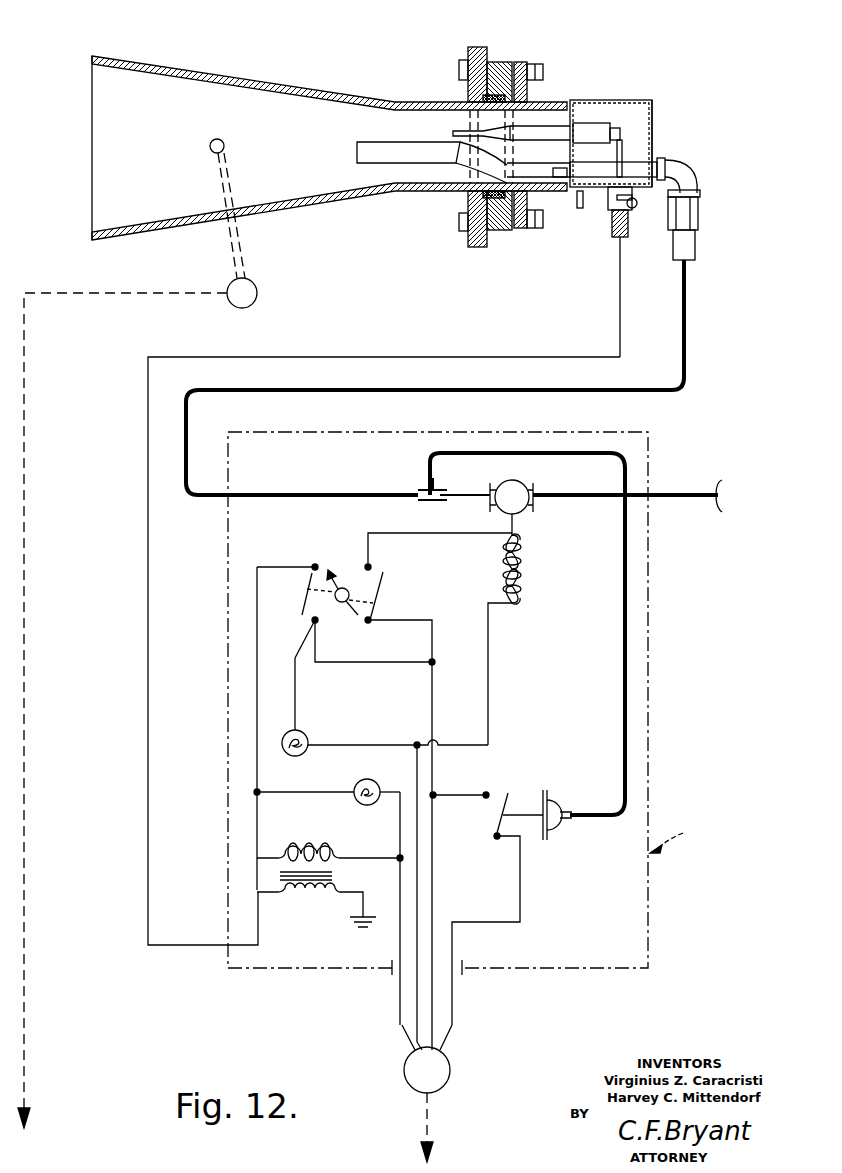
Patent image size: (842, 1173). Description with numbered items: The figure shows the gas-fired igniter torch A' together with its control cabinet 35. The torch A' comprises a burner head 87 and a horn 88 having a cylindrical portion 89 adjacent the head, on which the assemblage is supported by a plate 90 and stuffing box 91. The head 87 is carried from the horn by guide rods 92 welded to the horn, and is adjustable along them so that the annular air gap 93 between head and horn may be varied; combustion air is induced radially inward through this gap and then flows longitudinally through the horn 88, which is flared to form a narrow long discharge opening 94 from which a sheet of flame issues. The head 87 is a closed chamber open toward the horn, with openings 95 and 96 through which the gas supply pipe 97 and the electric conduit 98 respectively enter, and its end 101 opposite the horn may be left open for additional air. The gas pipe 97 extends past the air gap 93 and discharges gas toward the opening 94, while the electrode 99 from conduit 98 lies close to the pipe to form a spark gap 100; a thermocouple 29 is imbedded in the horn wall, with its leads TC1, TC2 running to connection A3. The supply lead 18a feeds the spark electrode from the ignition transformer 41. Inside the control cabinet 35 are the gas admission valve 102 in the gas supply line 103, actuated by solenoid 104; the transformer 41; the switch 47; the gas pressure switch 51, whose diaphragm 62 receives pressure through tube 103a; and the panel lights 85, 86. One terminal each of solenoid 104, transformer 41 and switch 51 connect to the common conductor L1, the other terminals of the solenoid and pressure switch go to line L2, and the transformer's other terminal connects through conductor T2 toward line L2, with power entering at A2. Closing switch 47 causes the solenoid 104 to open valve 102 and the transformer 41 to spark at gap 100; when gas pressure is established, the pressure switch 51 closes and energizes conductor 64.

The discharge opening 94 is at (92, 152).
The horn 88 is at (273, 83).
The cylindrical portion 89 is at (455, 188).
The gas torch A' is at (273, 228).
The thermocouple 29 is at (212, 152).
The thermocouple lead TC1 is at (248, 260).
The thermocouple lead TC2 is at (233, 259).
The thermocouple connection A3 is at (257, 295).
The plate 90 is at (473, 48).
The stuffing box 91 is at (507, 62).
The spark gap 100 is at (452, 138).
The electrode 99 is at (452, 131).
The guide rods 92 is at (553, 191).
The burner head 87 is at (630, 100).
The end 101 is at (653, 128).
The air gap 93 is at (567, 102).
The opening 95 is at (657, 163).
The gas supply pipe 97 is at (687, 170).
The opening 96 is at (636, 200).
The electric conduit 98 is at (612, 230).
The supply lead 18a is at (347, 355).
The tube 103a is at (627, 573).
The gas supply line 103 is at (688, 493).
The gas admission valve 102 is at (523, 481).
The solenoid 104 is at (522, 572).
The switch 47 is at (343, 588).
The panel light 85 is at (306, 734).
The panel light 86 is at (363, 780).
The ignition transformer 41 is at (280, 875).
The gas pressure switch 51 is at (493, 792).
The diaphragm 62 is at (555, 825).
The control cabinet 35 is at (650, 745).
The conductor T2 is at (402, 987).
The conductor 64 is at (453, 987).
The line L2 is at (427, 1015).
The common conductor L1 is at (427, 1015).
The power connection A2 is at (448, 1078).